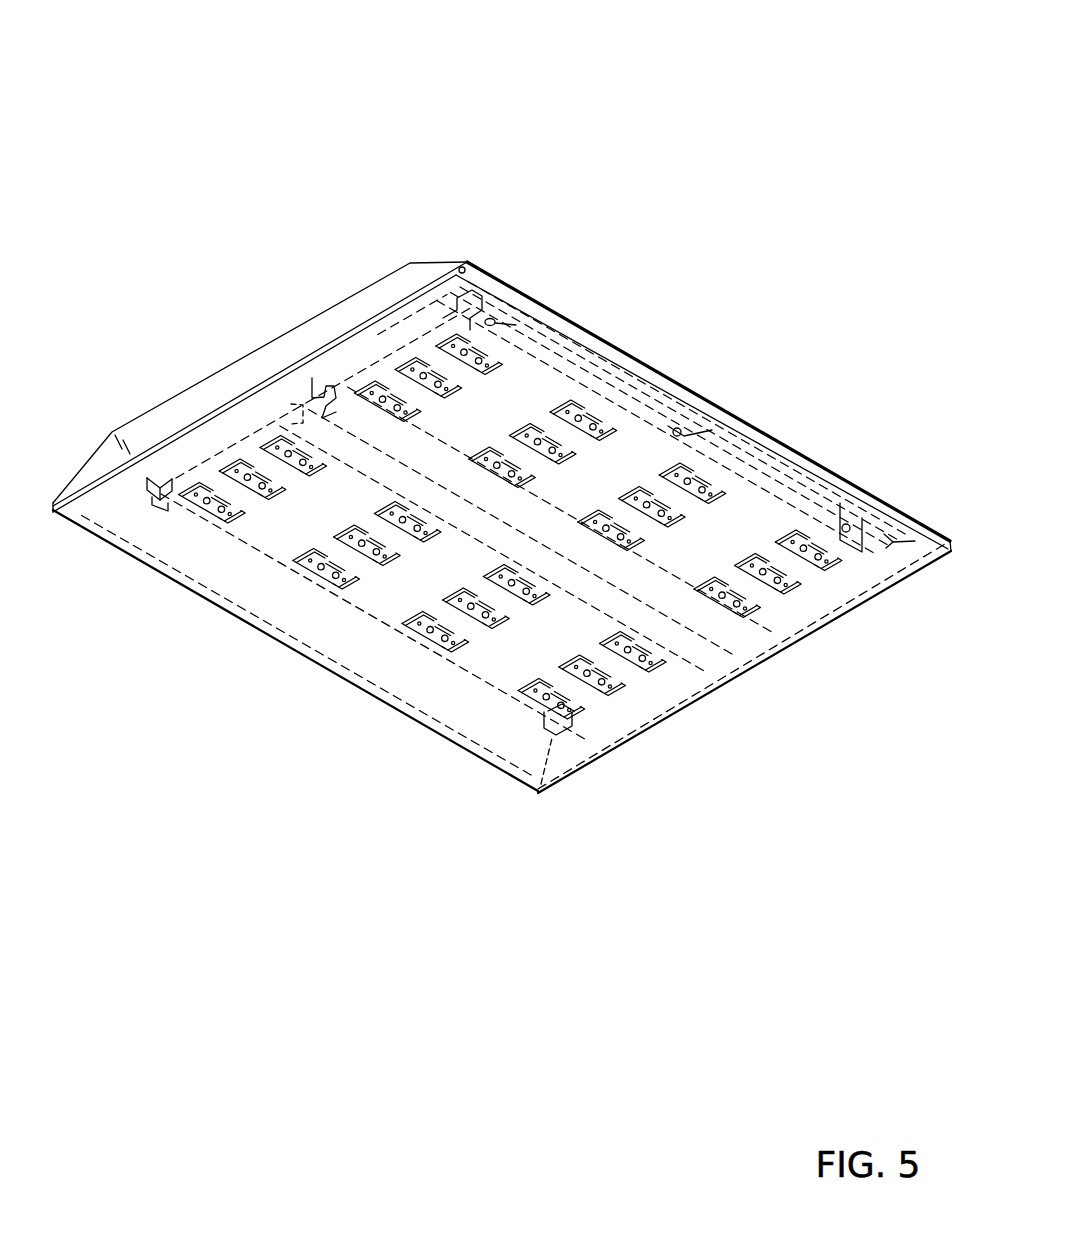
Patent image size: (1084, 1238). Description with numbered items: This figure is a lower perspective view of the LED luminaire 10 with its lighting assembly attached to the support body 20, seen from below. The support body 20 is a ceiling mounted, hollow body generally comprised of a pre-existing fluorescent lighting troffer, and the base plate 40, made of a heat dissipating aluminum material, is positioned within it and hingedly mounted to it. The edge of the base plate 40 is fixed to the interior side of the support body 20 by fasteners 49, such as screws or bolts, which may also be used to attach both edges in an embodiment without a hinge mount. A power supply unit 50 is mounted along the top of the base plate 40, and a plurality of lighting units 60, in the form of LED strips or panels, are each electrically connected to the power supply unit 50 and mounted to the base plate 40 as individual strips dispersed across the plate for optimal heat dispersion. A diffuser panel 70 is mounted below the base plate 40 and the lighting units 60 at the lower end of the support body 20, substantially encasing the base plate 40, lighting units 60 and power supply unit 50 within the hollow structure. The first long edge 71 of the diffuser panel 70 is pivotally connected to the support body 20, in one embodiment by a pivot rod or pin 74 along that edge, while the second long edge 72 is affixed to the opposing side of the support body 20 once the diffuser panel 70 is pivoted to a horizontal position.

The LED luminaire 10 is at (648, 138).
The support body 20 is at (331, 290).
The base plate 40 is at (236, 443).
The fasteners 49 is at (524, 326).
The power supply unit 50 is at (310, 378).
The lighting units 60 is at (382, 572).
The diffuser panel 70 is at (395, 716).
The first long edge 71 is at (662, 383).
The second long edge 72 is at (207, 601).
The pivot rod or pin 74 is at (458, 268).